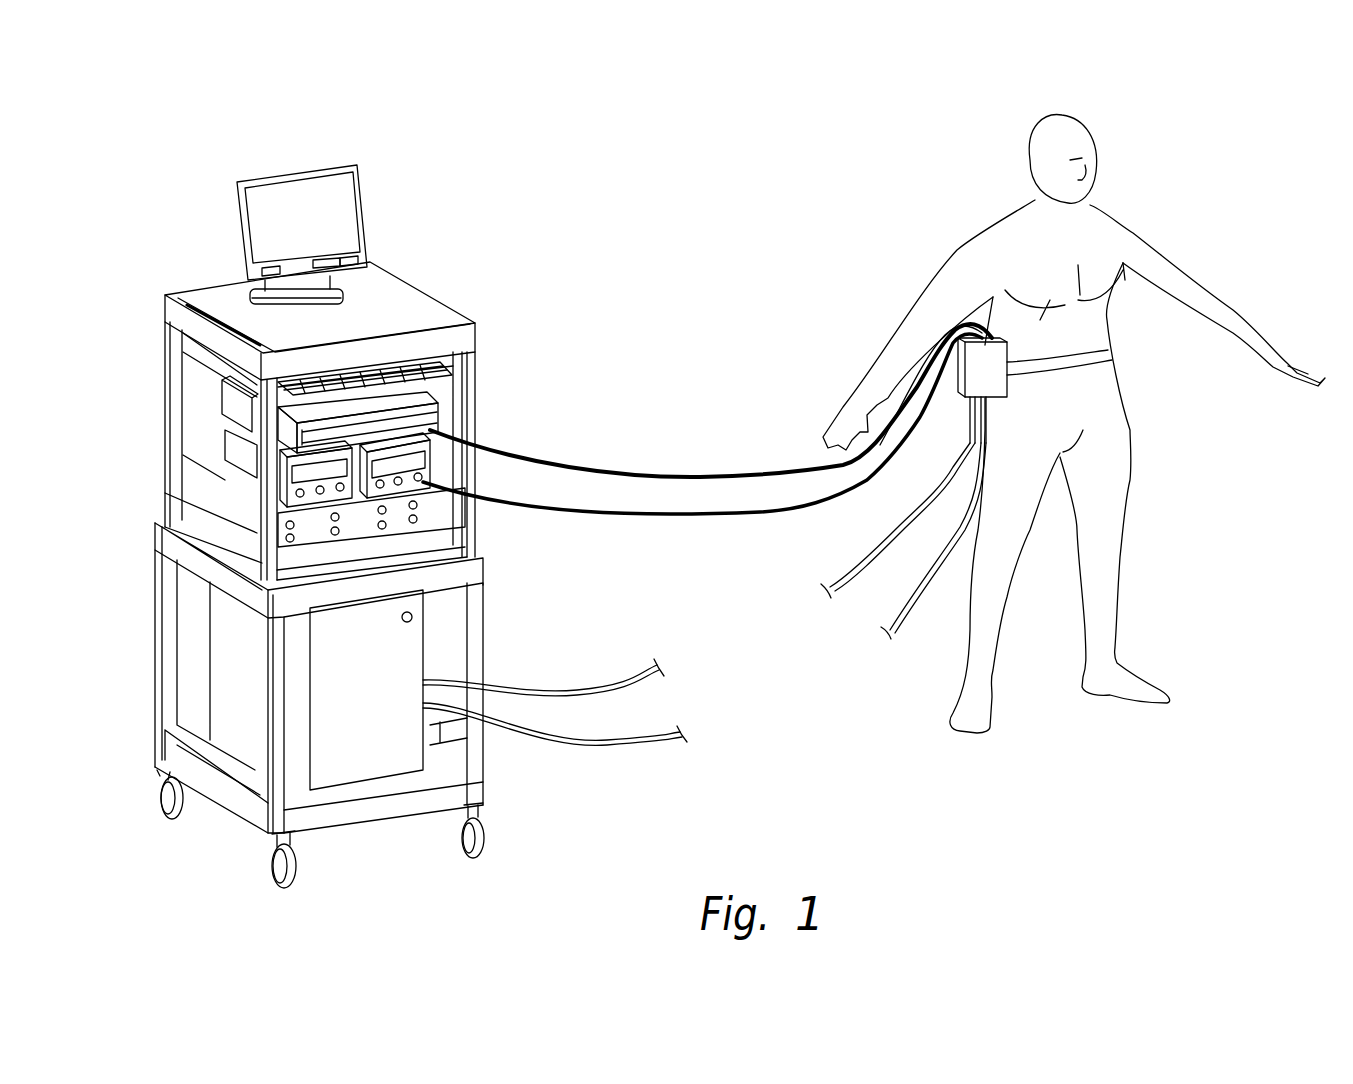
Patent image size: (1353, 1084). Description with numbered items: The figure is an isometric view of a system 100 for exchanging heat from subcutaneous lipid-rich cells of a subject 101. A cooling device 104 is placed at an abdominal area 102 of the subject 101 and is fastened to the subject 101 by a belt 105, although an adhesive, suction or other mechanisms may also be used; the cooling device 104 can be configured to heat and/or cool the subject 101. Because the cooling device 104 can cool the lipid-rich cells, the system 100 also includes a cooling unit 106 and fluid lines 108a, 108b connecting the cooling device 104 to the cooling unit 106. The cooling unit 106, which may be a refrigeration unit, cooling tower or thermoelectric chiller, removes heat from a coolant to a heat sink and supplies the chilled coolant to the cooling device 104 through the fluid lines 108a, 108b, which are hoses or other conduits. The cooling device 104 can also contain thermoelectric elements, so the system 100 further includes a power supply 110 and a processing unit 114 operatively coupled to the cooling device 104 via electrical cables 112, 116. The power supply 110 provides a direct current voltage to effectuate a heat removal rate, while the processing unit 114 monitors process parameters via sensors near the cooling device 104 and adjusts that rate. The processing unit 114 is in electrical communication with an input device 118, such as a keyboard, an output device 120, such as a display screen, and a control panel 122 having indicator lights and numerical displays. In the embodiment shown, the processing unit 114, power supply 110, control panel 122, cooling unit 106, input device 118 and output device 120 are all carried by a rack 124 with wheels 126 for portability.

The system 100 is at (212, 108).
The subject 101 is at (1118, 217).
The abdominal area 102 is at (1048, 381).
The cooling device 104 is at (993, 285).
The belt 105 is at (1110, 347).
The cooling unit 106 is at (358, 757).
The fluid line 108a is at (580, 690).
The fluid line 108b is at (633, 745).
The power supply 110 is at (433, 462).
The electrical cable 112 is at (690, 518).
The processing unit 114 is at (437, 422).
The electrical cable 116 is at (743, 477).
The input device 118 is at (445, 366).
The output device 120 is at (333, 167).
The control panel 122 is at (398, 517).
The rack 124 is at (403, 287).
The wheels 126 is at (490, 835).